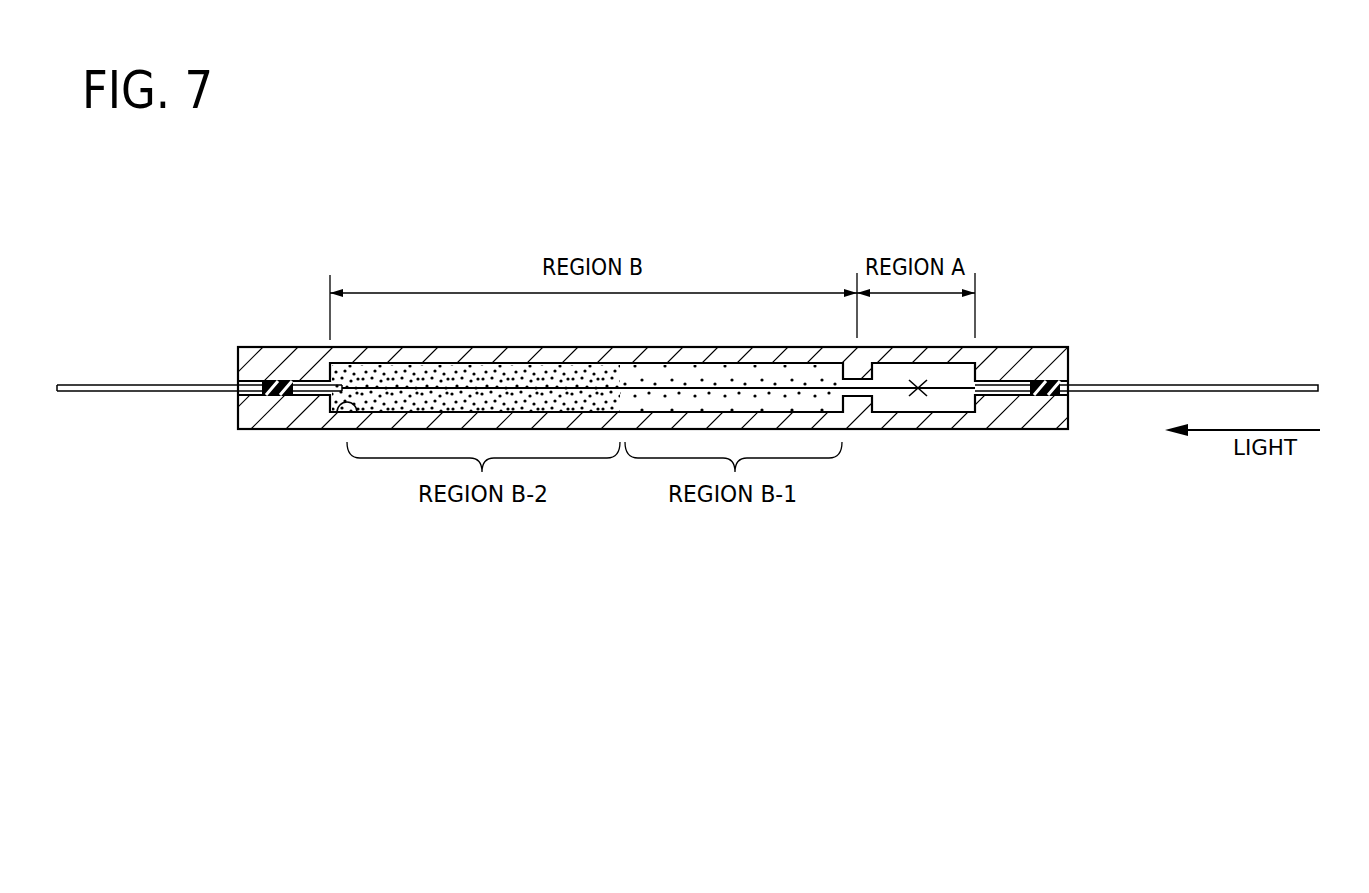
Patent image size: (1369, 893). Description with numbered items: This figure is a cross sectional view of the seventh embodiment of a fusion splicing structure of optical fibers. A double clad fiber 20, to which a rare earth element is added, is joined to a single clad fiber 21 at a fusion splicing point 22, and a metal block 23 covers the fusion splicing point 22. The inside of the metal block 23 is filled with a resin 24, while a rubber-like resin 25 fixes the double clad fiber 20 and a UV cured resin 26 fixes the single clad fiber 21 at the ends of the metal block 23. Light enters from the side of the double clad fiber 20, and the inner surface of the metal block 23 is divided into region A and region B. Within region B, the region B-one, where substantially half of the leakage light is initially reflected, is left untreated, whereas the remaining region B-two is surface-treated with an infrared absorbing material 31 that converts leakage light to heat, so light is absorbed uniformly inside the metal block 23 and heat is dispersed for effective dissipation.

The double clad fiber 20 is at (1250, 383).
The single clad fiber 21 is at (113, 385).
The fusion splicing point 22 is at (918, 398).
The metal block 23 is at (1033, 349).
The resin 24 is at (657, 404).
The rubber-like resin 25 is at (1046, 396).
The UV cured resin 26 is at (278, 381).
The infrared absorbing material 31 is at (338, 414).